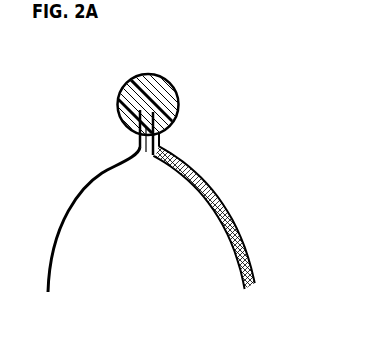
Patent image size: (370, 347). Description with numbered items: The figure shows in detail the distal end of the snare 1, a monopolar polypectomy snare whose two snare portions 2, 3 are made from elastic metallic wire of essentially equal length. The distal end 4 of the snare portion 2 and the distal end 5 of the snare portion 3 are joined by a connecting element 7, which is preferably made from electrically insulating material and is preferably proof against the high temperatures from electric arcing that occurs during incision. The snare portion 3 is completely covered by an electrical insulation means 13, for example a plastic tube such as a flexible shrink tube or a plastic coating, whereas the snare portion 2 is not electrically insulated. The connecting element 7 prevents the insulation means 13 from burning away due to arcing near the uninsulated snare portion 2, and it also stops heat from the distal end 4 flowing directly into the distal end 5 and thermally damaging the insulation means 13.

The snare 1 is at (149, 257).
The snare portion 2 is at (80, 200).
The snare portion 3 is at (213, 188).
The distal end 4 is at (138, 144).
The distal end 5 is at (158, 146).
The connecting element 7 is at (178, 99).
The electrical insulation means 13 is at (247, 252).